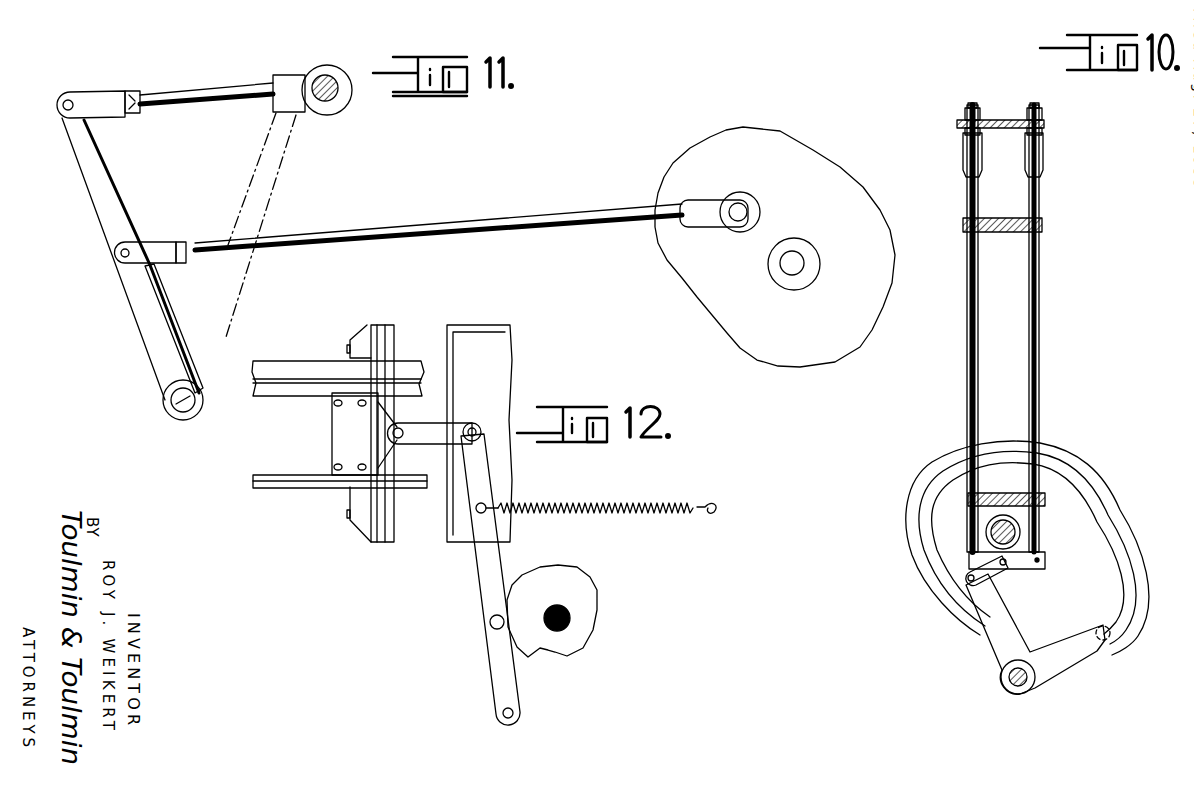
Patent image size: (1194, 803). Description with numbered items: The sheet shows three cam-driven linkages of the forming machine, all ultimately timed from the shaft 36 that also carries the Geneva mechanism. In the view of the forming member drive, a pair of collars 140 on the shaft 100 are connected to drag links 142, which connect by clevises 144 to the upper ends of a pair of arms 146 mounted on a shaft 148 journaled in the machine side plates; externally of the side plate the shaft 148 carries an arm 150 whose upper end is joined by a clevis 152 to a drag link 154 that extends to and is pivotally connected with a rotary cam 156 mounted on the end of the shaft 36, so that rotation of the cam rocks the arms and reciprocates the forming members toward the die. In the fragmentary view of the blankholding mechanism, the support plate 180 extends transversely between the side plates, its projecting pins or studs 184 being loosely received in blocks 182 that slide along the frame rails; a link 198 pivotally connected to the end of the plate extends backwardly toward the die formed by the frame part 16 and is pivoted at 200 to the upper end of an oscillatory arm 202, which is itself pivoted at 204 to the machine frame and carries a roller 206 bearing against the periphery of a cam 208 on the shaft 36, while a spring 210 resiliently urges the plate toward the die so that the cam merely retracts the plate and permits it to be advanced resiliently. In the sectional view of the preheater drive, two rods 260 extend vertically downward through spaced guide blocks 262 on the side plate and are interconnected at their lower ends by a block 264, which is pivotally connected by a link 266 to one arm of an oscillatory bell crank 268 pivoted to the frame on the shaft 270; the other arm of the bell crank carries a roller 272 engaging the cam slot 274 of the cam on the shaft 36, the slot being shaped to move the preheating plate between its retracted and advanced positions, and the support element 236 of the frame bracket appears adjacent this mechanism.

In FIG. 12, the frame part 16 is at (512, 325).
In FIG. 11, the shaft 36 is at (798, 270).
In FIG. 12, the shaft 36 is at (570, 621).
In FIG. 10, the shaft 36 is at (1016, 528).
In FIG. 11, the shaft 100 is at (338, 96).
In FIG. 11, the collars 140 is at (320, 70).
In FIG. 11, the drag links 142 is at (225, 70).
In FIG. 11, the clevises 144 is at (108, 95).
In FIG. 11, the arms 146 is at (98, 200).
In FIG. 11, the shaft 148 is at (200, 397).
In FIG. 11, the arm 150 is at (160, 332).
In FIG. 11, the clevis 152 is at (170, 243).
In FIG. 11, the drag link 154 is at (460, 206).
In FIG. 11, the rotary cam 156 is at (817, 152).
In FIG. 10, the rotary cam 156 is at (922, 592).
In FIG. 12, the support plate 180 is at (392, 346).
In FIG. 12, the blocks 182 is at (332, 432).
In FIG. 12, the pins or studs 184 is at (362, 471).
In FIG. 12, the link 198 is at (448, 430).
In FIG. 12, the pivotal connection 200 is at (480, 428).
In FIG. 12, the oscillatory arm 202 is at (478, 560).
In FIG. 12, the pivot 204 is at (515, 718).
In FIG. 12, the roller 206 is at (490, 622).
In FIG. 12, the cam 208 is at (600, 592).
In FIG. 12, the spring 210 is at (672, 505).
In FIG. 10, the support element 236 is at (963, 560).
In FIG. 10, the rods 260 is at (1028, 352).
In FIG. 10, the guide blocks 262 is at (1043, 226).
In FIG. 10, the block 264 is at (1043, 533).
In FIG. 10, the link 266 is at (972, 586).
In FIG. 10, the bell crank 268 is at (998, 655).
In FIG. 10, the shaft 270 is at (1026, 684).
In FIG. 10, the roller 272 is at (1110, 640).
In FIG. 10, the cam slot 274 is at (1090, 516).